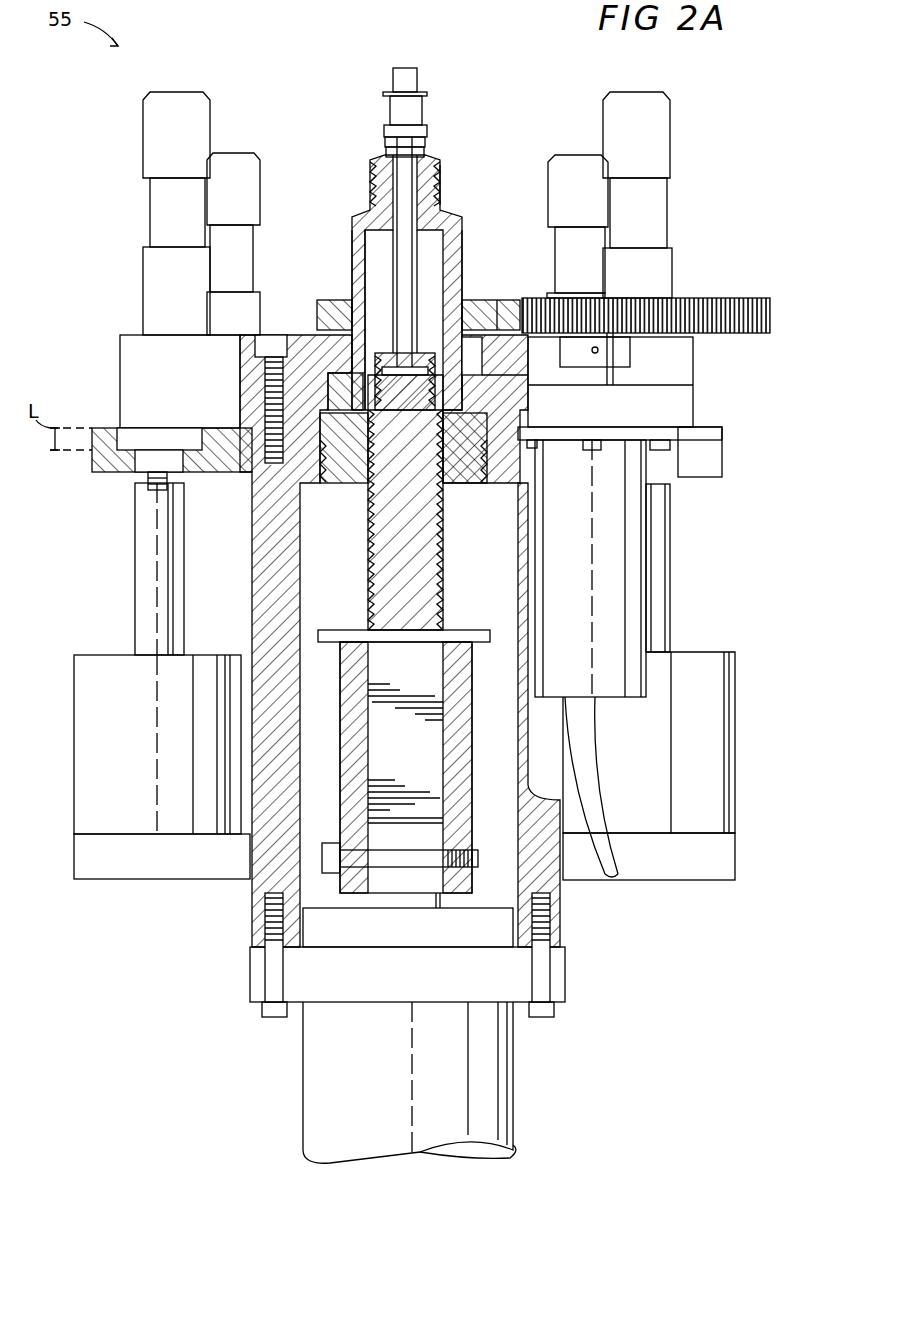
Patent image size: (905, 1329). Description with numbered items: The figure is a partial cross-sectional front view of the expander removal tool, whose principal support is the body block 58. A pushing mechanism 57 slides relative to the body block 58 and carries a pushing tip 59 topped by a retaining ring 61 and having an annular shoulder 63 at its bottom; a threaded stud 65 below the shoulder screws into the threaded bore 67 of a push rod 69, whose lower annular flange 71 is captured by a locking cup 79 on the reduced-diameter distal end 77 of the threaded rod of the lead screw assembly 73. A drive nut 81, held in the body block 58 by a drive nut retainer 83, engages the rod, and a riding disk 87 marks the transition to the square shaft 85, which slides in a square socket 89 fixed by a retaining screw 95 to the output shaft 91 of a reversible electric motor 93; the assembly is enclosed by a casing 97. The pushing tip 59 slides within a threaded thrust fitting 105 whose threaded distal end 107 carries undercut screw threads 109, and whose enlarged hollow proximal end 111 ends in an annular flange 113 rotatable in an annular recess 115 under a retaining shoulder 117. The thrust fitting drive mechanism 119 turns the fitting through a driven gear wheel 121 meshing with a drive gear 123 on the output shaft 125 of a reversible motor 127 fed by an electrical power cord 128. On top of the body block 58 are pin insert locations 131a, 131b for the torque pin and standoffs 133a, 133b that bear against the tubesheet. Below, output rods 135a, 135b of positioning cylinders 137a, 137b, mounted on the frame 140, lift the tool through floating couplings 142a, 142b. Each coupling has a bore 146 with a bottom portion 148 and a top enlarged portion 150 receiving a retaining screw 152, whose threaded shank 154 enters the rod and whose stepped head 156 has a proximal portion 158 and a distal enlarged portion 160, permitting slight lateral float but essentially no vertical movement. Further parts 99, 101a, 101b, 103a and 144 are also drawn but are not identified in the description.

The pushing mechanism 57 is at (365, 236).
The body block 58 is at (180, 381).
The pushing tip 59 is at (424, 112).
The retaining ring 61 is at (420, 90).
The annular shoulder 63 is at (385, 128).
The threaded stud 65 is at (425, 142).
The threaded bore 67 is at (425, 152).
The push rod 69 is at (413, 190).
The annular flange 71 is at (418, 366).
The lead screw assembly 73 is at (366, 557).
The distal end 77 is at (360, 372).
The locking cup 79 is at (400, 402).
The drive nut 81 is at (460, 483).
The drive nut retainer 83 is at (338, 483).
The square shaft 85 is at (406, 767).
The riding disk 87 is at (470, 630).
The square socket 89 is at (340, 660).
The output shaft 91 is at (440, 895).
The reversible electric motor 93 is at (409, 1082).
The retaining screw 95 is at (333, 843).
The casing 97 is at (254, 588).
The base plate 99 is at (407, 974).
The bolt 101a is at (265, 1012).
The bolt 101b is at (552, 1012).
The flange 103a is at (312, 333).
The threaded thrust fitting 105 is at (465, 252).
The threaded distal end 107 is at (370, 186).
The screw threads 109 is at (445, 175).
The enlarged hollow proximal end 111 is at (352, 263).
The annular flange 113 is at (495, 395).
The annular recess 115 is at (485, 378).
The retaining shoulder 117 is at (482, 345).
The thrust fitting drive mechanism 119 is at (548, 282).
The driven gear wheel 121 is at (478, 300).
The drive gear 123 is at (700, 298).
The output shaft 125 is at (612, 375).
The reversible motor 127 is at (605, 627).
The electrical power cord 128 is at (612, 868).
The pin insert location 131a is at (176, 213).
The pin insert location 131b is at (637, 195).
The standoff 133a is at (233, 244).
The standoff 133b is at (577, 226).
The output rod 135a is at (135, 584).
The output rod 135b is at (660, 575).
The positioning cylinder 137a is at (157, 744).
The positioning cylinder 137b is at (649, 766).
The frame 140 is at (162, 862).
The floating coupling 142a is at (92, 472).
The floating coupling 142b is at (722, 477).
The recess 144 is at (108, 472).
The bore 146 is at (135, 480).
The bottom portion 148 is at (185, 472).
The top enlarged portion 150 is at (125, 428).
The retaining screw 152 is at (148, 425).
The threaded shank 154 is at (158, 490).
The stepped head 156 is at (182, 428).
The proximal portion 158 is at (159, 461).
The distal enlarged portion 160 is at (159, 439).